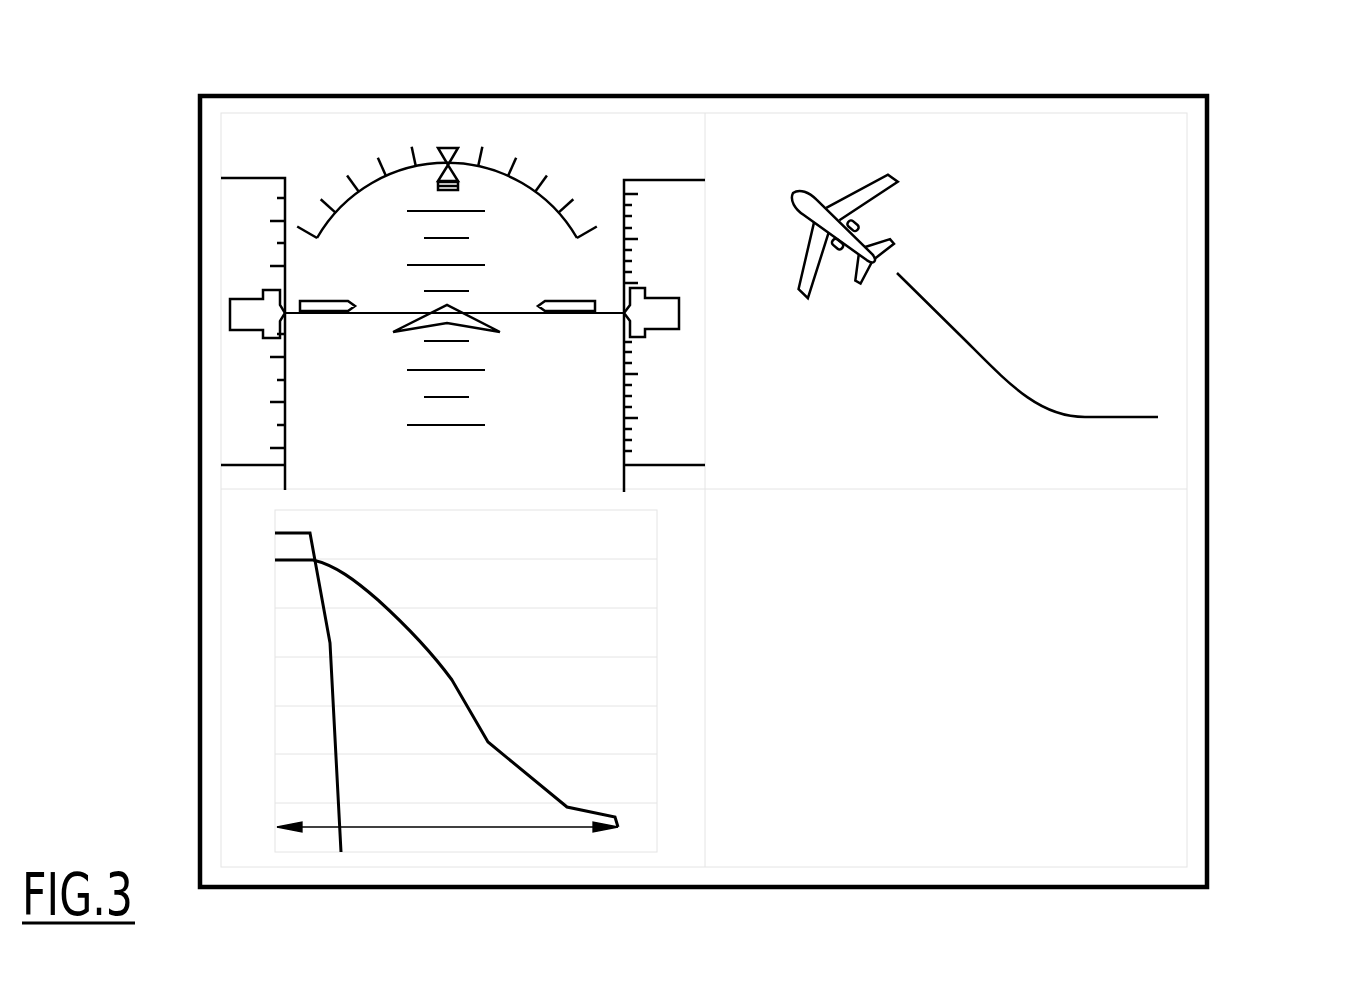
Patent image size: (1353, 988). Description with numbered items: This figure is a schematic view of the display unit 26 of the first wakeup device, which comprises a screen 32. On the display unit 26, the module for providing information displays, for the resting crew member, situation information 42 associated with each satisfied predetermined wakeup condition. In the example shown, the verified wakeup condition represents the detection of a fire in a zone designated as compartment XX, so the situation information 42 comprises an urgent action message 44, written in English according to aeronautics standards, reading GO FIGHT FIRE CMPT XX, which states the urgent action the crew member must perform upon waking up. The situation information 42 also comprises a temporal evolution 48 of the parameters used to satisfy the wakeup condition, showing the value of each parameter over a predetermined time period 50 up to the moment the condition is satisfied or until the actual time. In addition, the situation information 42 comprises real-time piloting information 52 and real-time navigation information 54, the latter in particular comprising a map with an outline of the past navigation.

The display unit 26 is at (1173, 82).
The screen 32 is at (1212, 302).
The situation information 42 is at (935, 112).
The urgent action message 44 is at (1150, 798).
The temporal evolution 48 is at (245, 720).
The predetermined time period 50 is at (457, 828).
The real-time piloting information 52 is at (447, 135).
The real-time navigation information 54 is at (1155, 193).